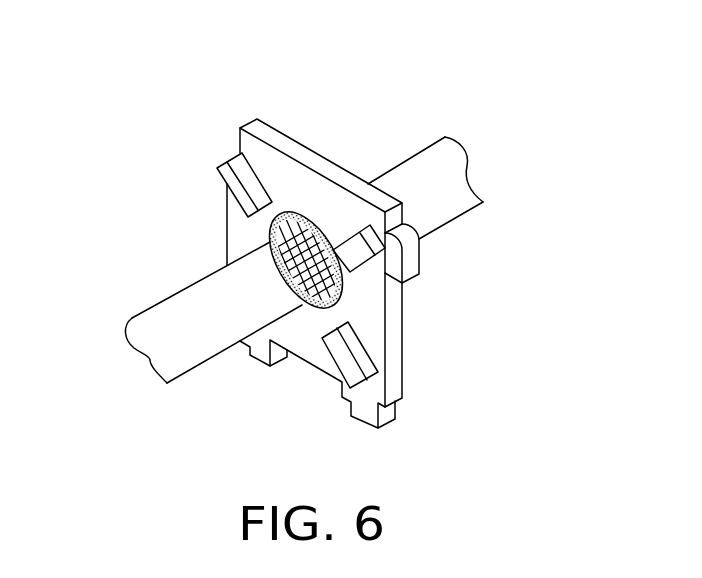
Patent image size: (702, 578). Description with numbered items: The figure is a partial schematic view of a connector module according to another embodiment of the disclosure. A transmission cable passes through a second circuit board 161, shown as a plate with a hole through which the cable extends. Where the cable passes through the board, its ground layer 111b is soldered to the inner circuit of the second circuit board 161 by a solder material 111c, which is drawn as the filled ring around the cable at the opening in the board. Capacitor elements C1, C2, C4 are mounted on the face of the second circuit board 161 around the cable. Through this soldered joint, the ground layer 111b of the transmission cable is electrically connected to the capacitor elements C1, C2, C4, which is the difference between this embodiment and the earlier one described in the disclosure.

The second circuit board 161 is at (282, 142).
The ground layer 111b is at (297, 266).
The solder material 111c is at (292, 215).
The capacitor element C1 is at (228, 165).
The capacitor element C2 is at (350, 258).
The capacitor element C4 is at (347, 362).